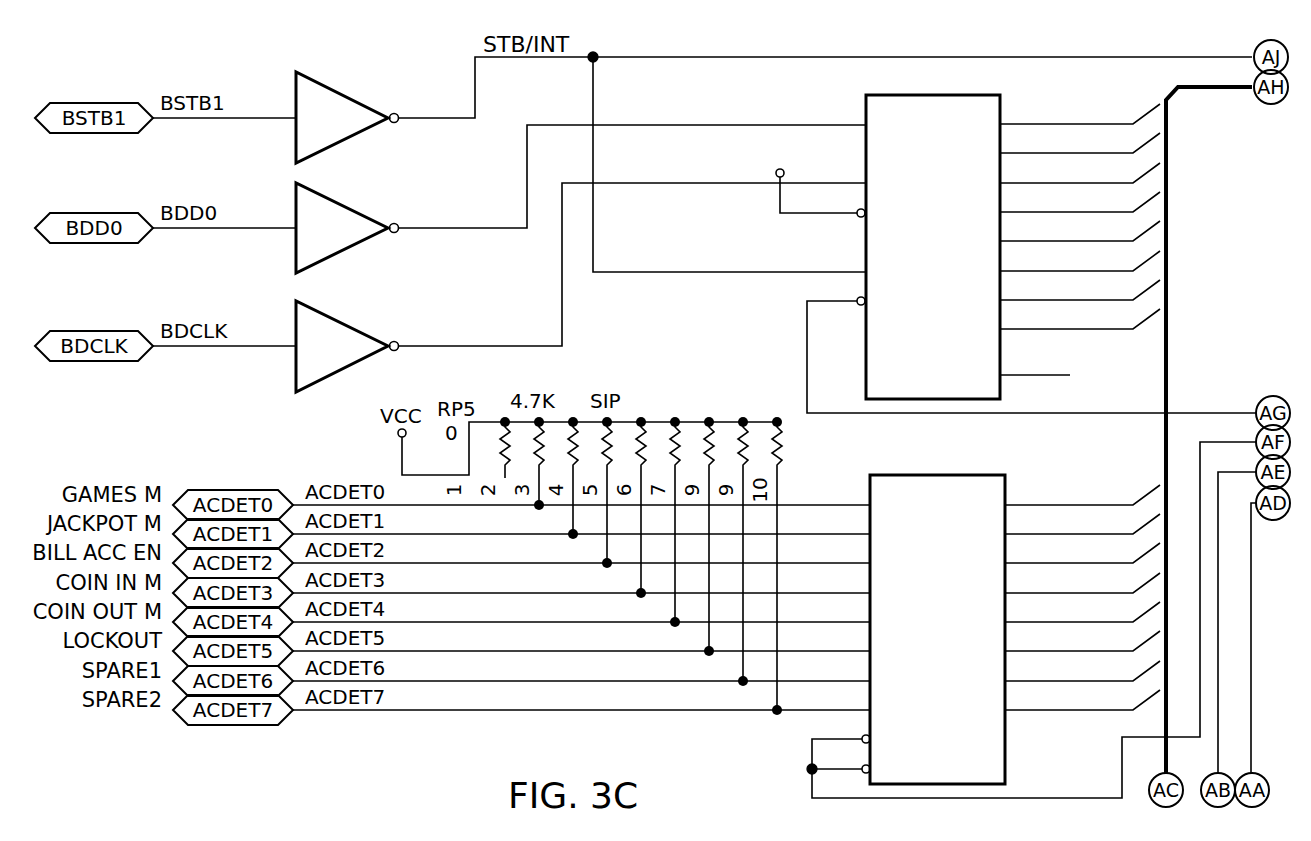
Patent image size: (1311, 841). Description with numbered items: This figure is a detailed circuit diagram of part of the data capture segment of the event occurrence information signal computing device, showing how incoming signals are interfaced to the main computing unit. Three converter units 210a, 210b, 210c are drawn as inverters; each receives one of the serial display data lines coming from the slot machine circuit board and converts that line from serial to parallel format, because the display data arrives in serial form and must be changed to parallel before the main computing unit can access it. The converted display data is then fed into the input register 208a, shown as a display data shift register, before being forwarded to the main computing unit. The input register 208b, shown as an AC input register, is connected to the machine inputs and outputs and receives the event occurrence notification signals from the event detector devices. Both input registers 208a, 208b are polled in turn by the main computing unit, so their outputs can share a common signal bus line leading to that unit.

The converter unit 210a is at (355, 106).
The converter unit 210b is at (355, 216).
The converter unit 210c is at (355, 334).
The input register 208a is at (975, 388).
The input register 208b is at (980, 738).